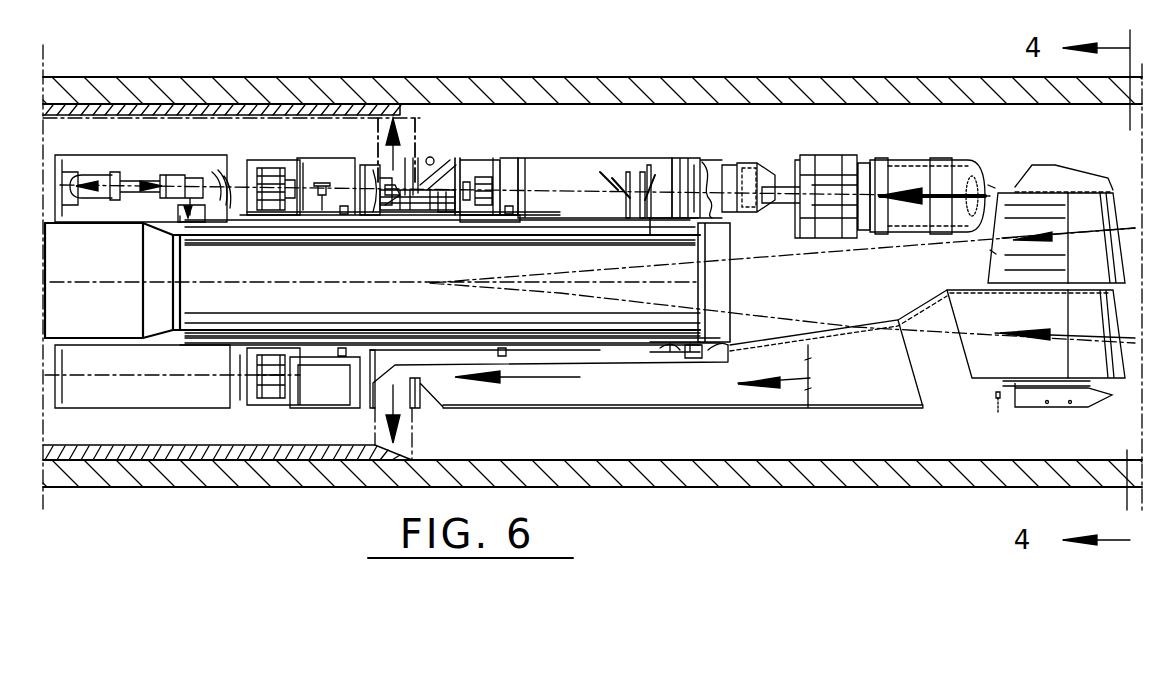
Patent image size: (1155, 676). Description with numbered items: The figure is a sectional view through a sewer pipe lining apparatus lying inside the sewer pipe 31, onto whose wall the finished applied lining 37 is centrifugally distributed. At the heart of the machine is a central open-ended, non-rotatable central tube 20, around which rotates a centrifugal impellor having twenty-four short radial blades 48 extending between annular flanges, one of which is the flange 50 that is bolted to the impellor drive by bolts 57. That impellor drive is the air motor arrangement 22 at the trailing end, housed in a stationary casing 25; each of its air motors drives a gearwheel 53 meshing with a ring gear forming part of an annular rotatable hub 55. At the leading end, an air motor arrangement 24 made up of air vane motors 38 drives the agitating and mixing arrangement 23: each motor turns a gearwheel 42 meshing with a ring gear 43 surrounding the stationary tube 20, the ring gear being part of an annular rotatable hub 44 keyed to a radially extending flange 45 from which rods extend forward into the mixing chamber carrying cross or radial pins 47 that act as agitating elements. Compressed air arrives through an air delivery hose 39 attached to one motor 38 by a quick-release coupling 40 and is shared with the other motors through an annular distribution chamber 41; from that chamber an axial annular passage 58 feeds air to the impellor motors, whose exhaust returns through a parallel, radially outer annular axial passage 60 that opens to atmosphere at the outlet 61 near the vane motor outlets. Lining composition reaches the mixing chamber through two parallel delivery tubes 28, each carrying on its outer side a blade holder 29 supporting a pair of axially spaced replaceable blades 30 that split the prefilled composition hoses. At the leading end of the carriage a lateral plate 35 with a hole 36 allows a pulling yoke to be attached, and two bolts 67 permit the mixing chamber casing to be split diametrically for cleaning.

The central tube 20 is at (210, 225).
The air motor arrangement 22 is at (172, 168).
The lining composition agitating and mixing arrangement 23 is at (458, 176).
The air motor arrangement 24 is at (590, 172).
The casing 25 is at (98, 158).
The delivery tubes 28 is at (985, 370).
The blade holder 29 is at (1030, 182).
The blades 30 is at (1092, 195).
The sewer pipe 31 is at (263, 88).
The lateral plate 35 is at (1020, 406).
The hole 36 is at (998, 414).
The applied lining 37 is at (346, 110).
The air vane motors 38 is at (630, 176).
The air delivery hose 39 is at (895, 182).
The quick-release coupling 40 is at (835, 182).
The annular distribution chamber 41 is at (692, 176).
The gearwheel 42 is at (492, 176).
The ring gear 43 is at (482, 218).
The annular rotatable hub 44 is at (405, 225).
The radially extending flange 45 is at (385, 200).
The cross or radial pins 47 is at (440, 207).
The blades 48 is at (402, 120).
The annular flange 50 is at (378, 180).
The gearwheel 53 is at (262, 172).
The annular rotatable hub 55 is at (280, 226).
The bolts 57 is at (362, 170).
The axial annular passage 58 is at (590, 236).
The annular axial passage 60 is at (536, 232).
The air outlet opening 61 is at (649, 215).
The bolts 67 is at (432, 163).